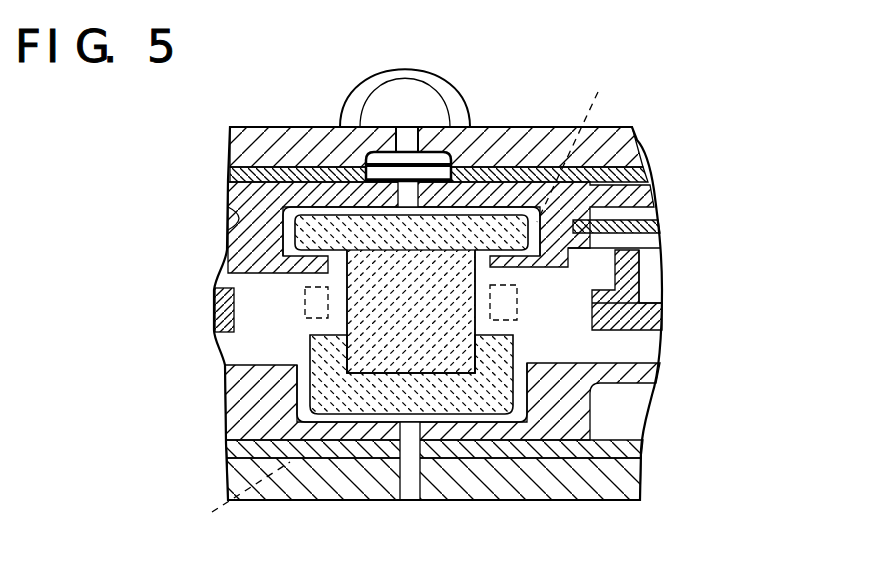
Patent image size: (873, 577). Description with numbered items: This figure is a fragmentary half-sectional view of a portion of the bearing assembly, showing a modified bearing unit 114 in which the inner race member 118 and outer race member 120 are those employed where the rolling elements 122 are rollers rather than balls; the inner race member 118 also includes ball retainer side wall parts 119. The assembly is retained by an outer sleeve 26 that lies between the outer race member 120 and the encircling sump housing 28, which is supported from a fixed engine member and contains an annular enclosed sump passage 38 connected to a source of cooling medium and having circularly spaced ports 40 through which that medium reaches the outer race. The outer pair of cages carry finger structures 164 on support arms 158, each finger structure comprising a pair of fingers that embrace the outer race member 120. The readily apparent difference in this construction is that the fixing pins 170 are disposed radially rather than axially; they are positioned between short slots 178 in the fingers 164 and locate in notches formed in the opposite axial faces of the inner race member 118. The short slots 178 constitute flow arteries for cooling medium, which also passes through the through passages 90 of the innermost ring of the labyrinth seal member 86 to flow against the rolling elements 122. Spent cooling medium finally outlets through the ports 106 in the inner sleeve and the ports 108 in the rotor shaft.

The outer sleeve 26 is at (243, 170).
The sump housing 28 is at (268, 127).
The sump passage 38 is at (403, 90).
The ports 40 is at (407, 138).
The labyrinth seal member 86 is at (656, 277).
The through passages 90 is at (635, 305).
The ports 106 is at (375, 492).
The ports 108 is at (410, 490).
The bearing unit 114 is at (345, 303).
The inner race member 118 is at (488, 405).
The ball retainer side wall parts 119 is at (528, 367).
The outer race member 120 is at (478, 230).
The rolling elements 122 is at (458, 328).
The support arms 158 is at (240, 195).
The finger structures 164 is at (615, 145).
The fixing pins 170 is at (397, 300).
The short slots 178 is at (325, 215).